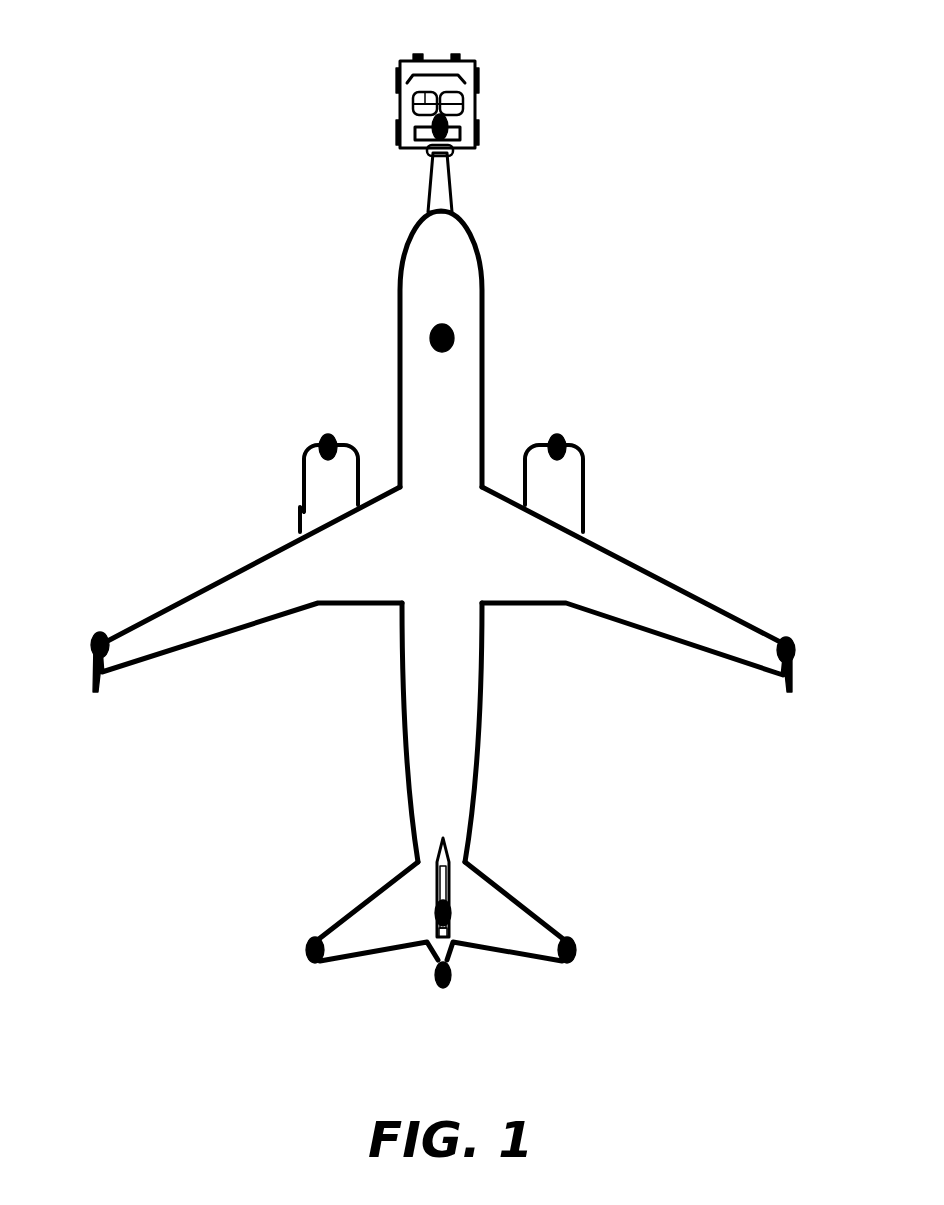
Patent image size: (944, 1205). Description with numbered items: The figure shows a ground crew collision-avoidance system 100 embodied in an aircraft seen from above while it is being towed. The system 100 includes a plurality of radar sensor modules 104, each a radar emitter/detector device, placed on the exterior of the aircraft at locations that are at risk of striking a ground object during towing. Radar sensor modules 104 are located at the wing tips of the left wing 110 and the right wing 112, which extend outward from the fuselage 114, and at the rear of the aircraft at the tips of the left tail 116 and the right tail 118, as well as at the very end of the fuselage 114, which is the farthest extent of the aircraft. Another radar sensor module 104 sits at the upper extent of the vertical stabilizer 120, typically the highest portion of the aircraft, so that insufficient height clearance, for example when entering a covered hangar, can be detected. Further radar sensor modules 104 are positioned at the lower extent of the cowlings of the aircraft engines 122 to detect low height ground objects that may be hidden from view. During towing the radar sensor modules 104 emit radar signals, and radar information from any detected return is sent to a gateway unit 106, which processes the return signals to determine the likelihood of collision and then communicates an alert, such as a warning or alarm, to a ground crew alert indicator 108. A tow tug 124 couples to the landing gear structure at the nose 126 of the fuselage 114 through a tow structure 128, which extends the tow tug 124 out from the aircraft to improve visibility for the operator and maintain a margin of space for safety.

The ground crew collision-avoidance system 100 is at (192, 153).
The radar sensor modules 104 is at (330, 436).
The gateway unit 106 is at (432, 338).
The ground crew alert indicator 108 is at (450, 119).
The left wing 110 is at (184, 651).
The right wing 112 is at (650, 647).
The fuselage 114 is at (478, 773).
The left tail 116 is at (330, 930).
The right tail 118 is at (515, 902).
The vertical stabilizer 120 is at (450, 853).
The aircraft engines 122 is at (299, 492).
The tow tug 124 is at (362, 85).
The nose 126 is at (170, 377).
The tow structure 128 is at (432, 182).